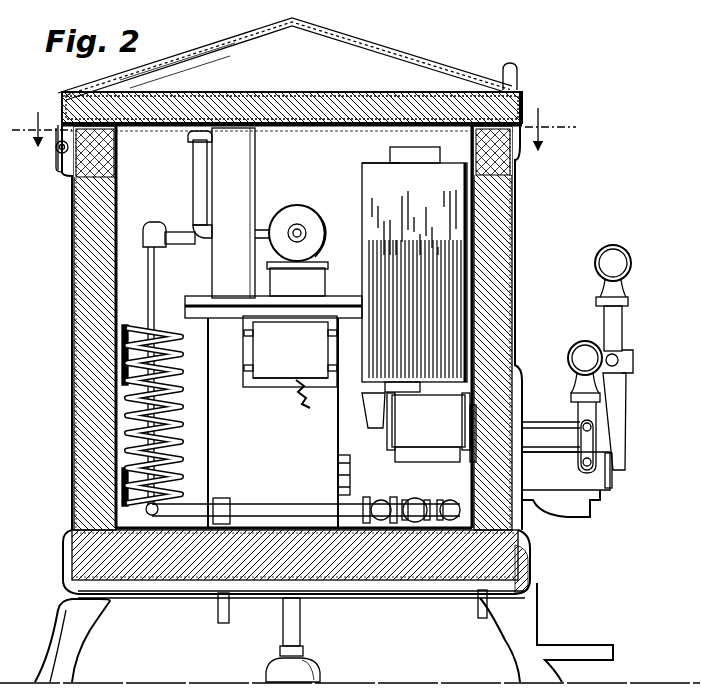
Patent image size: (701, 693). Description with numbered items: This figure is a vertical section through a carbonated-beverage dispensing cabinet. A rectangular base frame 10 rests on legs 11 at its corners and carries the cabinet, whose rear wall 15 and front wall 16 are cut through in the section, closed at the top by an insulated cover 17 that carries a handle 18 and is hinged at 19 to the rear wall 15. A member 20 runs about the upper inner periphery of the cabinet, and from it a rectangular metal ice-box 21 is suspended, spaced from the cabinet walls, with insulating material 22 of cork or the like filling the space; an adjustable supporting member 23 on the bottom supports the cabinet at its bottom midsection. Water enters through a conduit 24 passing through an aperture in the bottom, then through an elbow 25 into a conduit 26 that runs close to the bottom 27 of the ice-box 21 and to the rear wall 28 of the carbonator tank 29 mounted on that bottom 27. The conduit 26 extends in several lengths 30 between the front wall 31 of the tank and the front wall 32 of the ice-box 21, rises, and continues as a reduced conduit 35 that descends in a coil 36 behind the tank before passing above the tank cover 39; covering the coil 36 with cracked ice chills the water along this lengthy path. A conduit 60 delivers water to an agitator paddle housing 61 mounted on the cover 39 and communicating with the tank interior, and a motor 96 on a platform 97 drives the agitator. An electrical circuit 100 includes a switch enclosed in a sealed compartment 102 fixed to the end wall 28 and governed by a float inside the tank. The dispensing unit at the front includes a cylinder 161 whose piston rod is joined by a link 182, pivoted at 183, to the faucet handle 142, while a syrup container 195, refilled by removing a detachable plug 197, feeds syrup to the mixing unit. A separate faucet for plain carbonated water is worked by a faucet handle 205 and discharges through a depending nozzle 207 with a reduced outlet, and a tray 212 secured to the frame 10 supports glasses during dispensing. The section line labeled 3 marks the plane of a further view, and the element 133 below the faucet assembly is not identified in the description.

The section line 3- 3 is at (294, 116).
The base frame 10 is at (61, 560).
The legs 11 is at (60, 612).
The rear wall 15 is at (73, 217).
The front wall 16 is at (527, 231).
The cover 17 is at (402, 58).
The handle 18 is at (515, 66).
The hinge 19 is at (56, 152).
The member 20 is at (110, 166).
The ice-box 21 is at (118, 222).
The insulating material 22 is at (80, 255).
The adjustable supporting member 23 is at (288, 620).
The conduit 24 is at (220, 604).
The elbow 25 is at (232, 492).
The conduit 26 is at (283, 508).
The bottom 27 is at (157, 565).
The rear wall 28 is at (207, 398).
The carbonator tank 29 is at (300, 450).
The conduit lengths 30 is at (448, 500).
The front wall 31 is at (340, 387).
The front wall 32 is at (463, 265).
The reduced conduit 35 is at (148, 258).
The conduit coil 36 is at (127, 393).
The cover 39 is at (196, 298).
The conduit 60 is at (194, 180).
The agitator paddle housing 61 is at (244, 174).
The motor 96 is at (312, 223).
The platform 97 is at (298, 285).
The electrical circuit 100 is at (304, 400).
The sealed compartment 102 is at (293, 364).
The bracket hook 133 is at (577, 512).
The faucet handle 142 is at (587, 331).
The cylinder 161 is at (456, 414).
The link 182 is at (550, 430).
The pivot 183 is at (580, 423).
The syrup container 195 is at (373, 180).
The detachable plug 197 is at (398, 148).
The faucet handle 205 is at (625, 265).
The nozzle 207 is at (614, 438).
The tray 212 is at (583, 650).